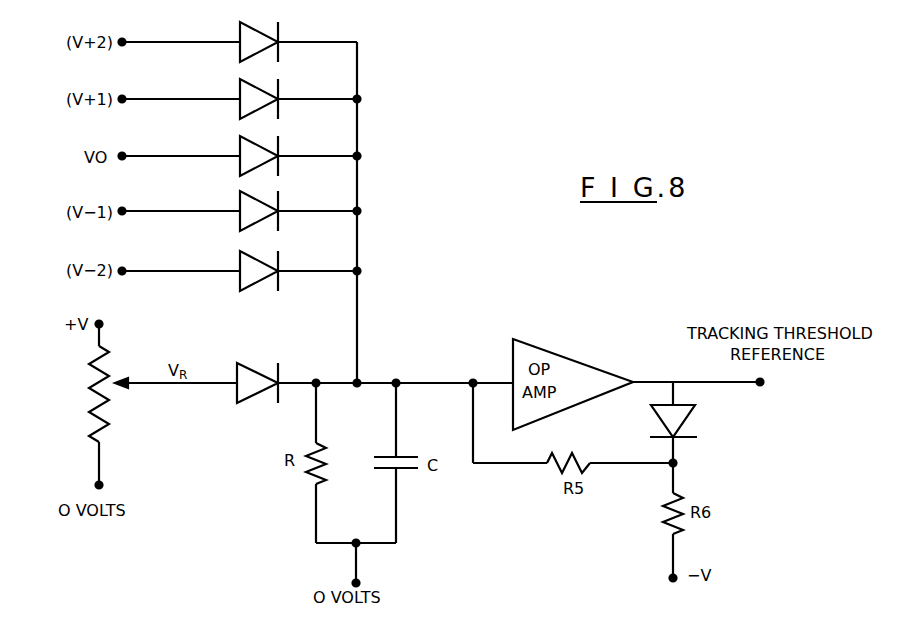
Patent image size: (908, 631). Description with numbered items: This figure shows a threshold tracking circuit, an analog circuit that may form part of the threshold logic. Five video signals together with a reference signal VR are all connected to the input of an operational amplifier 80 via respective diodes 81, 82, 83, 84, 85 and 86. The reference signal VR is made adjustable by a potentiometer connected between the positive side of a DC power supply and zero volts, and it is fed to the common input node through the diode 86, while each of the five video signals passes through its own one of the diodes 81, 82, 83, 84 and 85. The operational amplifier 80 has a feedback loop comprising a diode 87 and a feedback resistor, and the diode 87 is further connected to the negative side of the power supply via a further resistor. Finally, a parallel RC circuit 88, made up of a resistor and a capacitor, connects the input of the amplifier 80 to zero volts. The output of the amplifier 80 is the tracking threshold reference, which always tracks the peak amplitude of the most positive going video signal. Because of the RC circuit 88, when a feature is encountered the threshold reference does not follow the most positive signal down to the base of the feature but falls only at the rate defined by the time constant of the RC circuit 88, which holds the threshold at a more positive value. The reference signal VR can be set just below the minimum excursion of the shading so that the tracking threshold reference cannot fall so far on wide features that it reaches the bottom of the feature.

The operational amplifier 80 is at (564, 357).
The diode 81 is at (240, 28).
The diode 82 is at (240, 85).
The diode 83 is at (240, 142).
The diode 84 is at (240, 197).
The diode 85 is at (240, 257).
The diode 86 is at (253, 369).
The diode 87 is at (686, 417).
The parallel RC circuit 88 is at (363, 501).